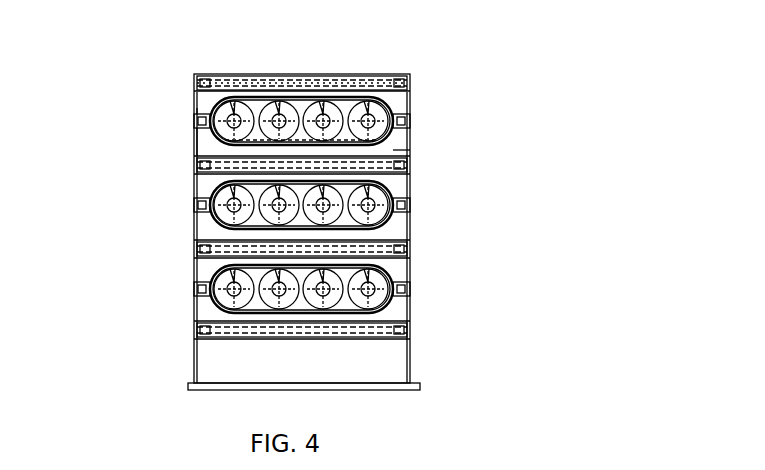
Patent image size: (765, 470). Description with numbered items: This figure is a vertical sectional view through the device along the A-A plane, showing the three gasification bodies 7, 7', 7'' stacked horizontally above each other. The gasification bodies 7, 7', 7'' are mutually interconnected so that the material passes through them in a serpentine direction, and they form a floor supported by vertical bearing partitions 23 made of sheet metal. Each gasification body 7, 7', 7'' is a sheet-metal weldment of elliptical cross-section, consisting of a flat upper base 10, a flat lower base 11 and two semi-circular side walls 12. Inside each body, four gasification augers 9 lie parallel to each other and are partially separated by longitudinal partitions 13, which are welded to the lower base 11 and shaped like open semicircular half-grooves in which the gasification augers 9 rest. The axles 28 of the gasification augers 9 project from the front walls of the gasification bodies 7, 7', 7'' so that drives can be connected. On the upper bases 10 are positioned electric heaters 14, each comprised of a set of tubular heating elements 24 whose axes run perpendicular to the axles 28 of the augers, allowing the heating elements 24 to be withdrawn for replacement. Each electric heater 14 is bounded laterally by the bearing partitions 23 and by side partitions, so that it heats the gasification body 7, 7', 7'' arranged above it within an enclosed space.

The gasification body 7 is at (275, 157).
The gasification body 7' is at (273, 241).
The gasification body 7'' is at (278, 317).
The gasification auger 9 is at (225, 137).
The upper base 10 is at (388, 75).
The lower base 11 is at (397, 153).
The side wall 12 is at (198, 103).
The longitudinal partition 13 is at (260, 147).
The electric heater 14 is at (360, 68).
The bearing partition 23 is at (205, 135).
The heating element 24 is at (258, 80).
The axle 28 is at (207, 352).